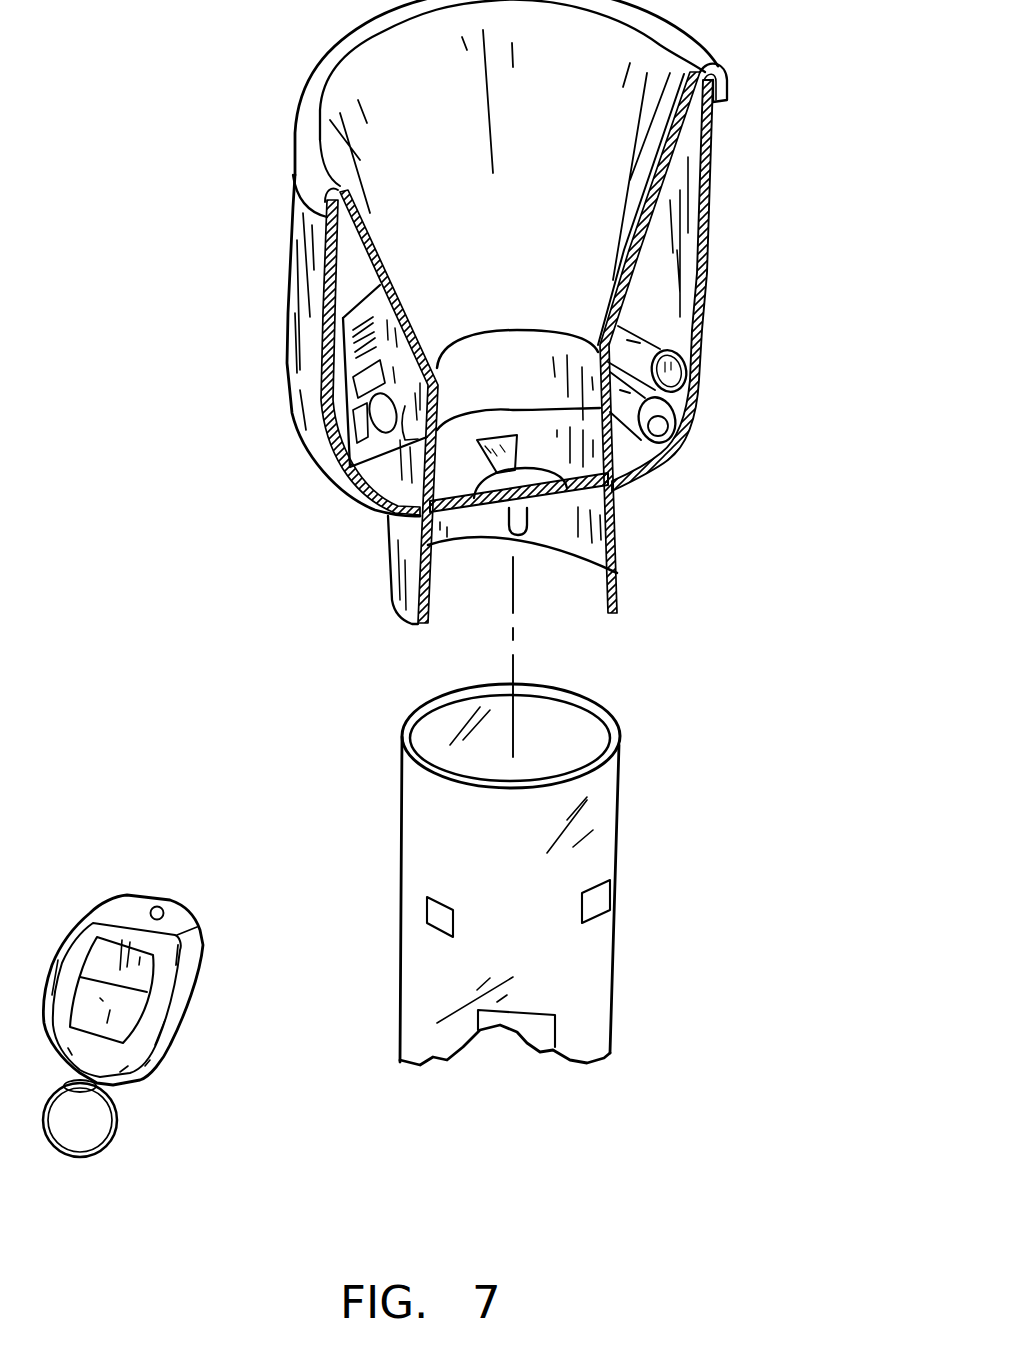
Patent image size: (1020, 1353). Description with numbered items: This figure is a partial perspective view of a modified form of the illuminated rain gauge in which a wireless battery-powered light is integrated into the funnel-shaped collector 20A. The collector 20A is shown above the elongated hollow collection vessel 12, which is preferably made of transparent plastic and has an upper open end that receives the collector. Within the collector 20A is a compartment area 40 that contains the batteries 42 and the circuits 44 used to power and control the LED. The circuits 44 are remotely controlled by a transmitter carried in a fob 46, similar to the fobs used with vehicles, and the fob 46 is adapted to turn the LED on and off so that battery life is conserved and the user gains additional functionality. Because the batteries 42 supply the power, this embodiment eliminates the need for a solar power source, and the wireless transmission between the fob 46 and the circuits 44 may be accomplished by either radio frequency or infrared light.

The funnel-shaped collector 20A is at (272, 393).
The compartment area 40 is at (680, 293).
The batteries 42 is at (676, 369).
The circuits 44 is at (367, 427).
The fob 46 is at (527, 523).
The collection vessel 12 is at (388, 913).